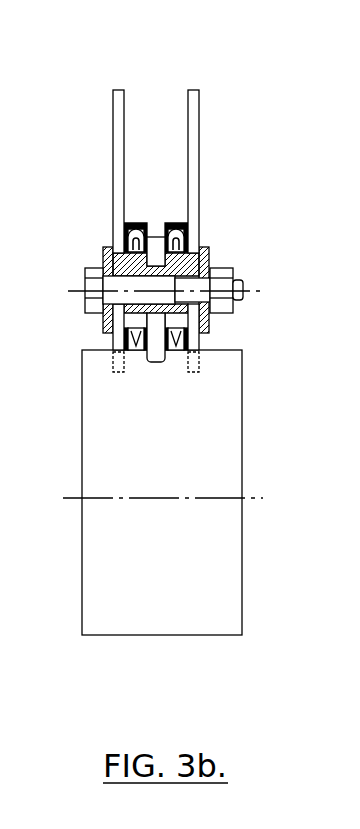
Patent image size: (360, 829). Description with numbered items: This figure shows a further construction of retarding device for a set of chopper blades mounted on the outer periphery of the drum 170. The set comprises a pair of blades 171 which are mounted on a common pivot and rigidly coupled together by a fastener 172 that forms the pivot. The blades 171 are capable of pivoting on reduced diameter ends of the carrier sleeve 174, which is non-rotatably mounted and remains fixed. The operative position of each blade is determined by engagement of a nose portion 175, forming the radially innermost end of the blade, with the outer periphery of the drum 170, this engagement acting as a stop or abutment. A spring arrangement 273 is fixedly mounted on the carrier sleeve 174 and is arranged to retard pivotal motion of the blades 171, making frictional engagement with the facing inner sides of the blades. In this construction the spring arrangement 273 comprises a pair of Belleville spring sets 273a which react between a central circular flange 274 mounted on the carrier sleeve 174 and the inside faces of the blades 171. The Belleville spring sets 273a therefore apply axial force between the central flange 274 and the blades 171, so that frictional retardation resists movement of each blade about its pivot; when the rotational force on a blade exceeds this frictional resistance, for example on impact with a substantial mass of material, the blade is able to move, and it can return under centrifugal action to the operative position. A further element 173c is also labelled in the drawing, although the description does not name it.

The drum 170 is at (215, 473).
The blades 171 is at (113, 167).
The fastener 172 is at (225, 272).
The pins 173c is at (128, 221).
The carrier sleeve 174 is at (210, 323).
The nose portion 175 is at (200, 367).
The spring arrangement 273 is at (174, 216).
The Belleville spring sets 273a is at (135, 350).
The central circular flange 274 is at (157, 251).